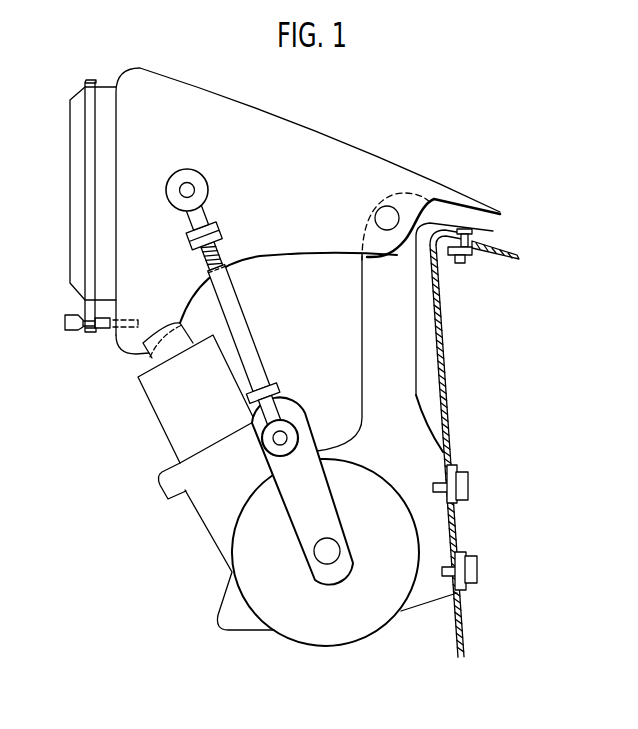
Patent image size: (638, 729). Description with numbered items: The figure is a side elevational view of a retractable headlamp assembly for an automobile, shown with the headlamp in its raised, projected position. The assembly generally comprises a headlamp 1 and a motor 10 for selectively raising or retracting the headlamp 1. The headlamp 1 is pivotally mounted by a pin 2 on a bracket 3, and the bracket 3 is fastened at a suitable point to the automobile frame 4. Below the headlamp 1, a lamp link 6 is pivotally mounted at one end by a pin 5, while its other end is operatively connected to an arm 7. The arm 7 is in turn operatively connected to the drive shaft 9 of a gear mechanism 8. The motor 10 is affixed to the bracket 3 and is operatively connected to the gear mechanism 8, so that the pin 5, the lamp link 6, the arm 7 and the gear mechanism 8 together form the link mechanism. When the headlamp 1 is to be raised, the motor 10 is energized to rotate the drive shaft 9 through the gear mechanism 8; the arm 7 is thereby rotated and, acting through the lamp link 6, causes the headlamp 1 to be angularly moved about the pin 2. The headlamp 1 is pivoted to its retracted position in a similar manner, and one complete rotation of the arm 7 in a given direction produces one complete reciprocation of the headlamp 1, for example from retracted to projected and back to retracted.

The headlamp 1 is at (183, 78).
The pin 2 is at (377, 211).
The bracket 3 is at (418, 329).
The automobile frame 4 is at (438, 377).
The pin 5 is at (187, 183).
The lamp link 6 is at (247, 318).
The arm 7 is at (303, 414).
The gear mechanism 8 is at (307, 643).
The drive shaft 9 is at (316, 555).
The motor 10 is at (197, 514).